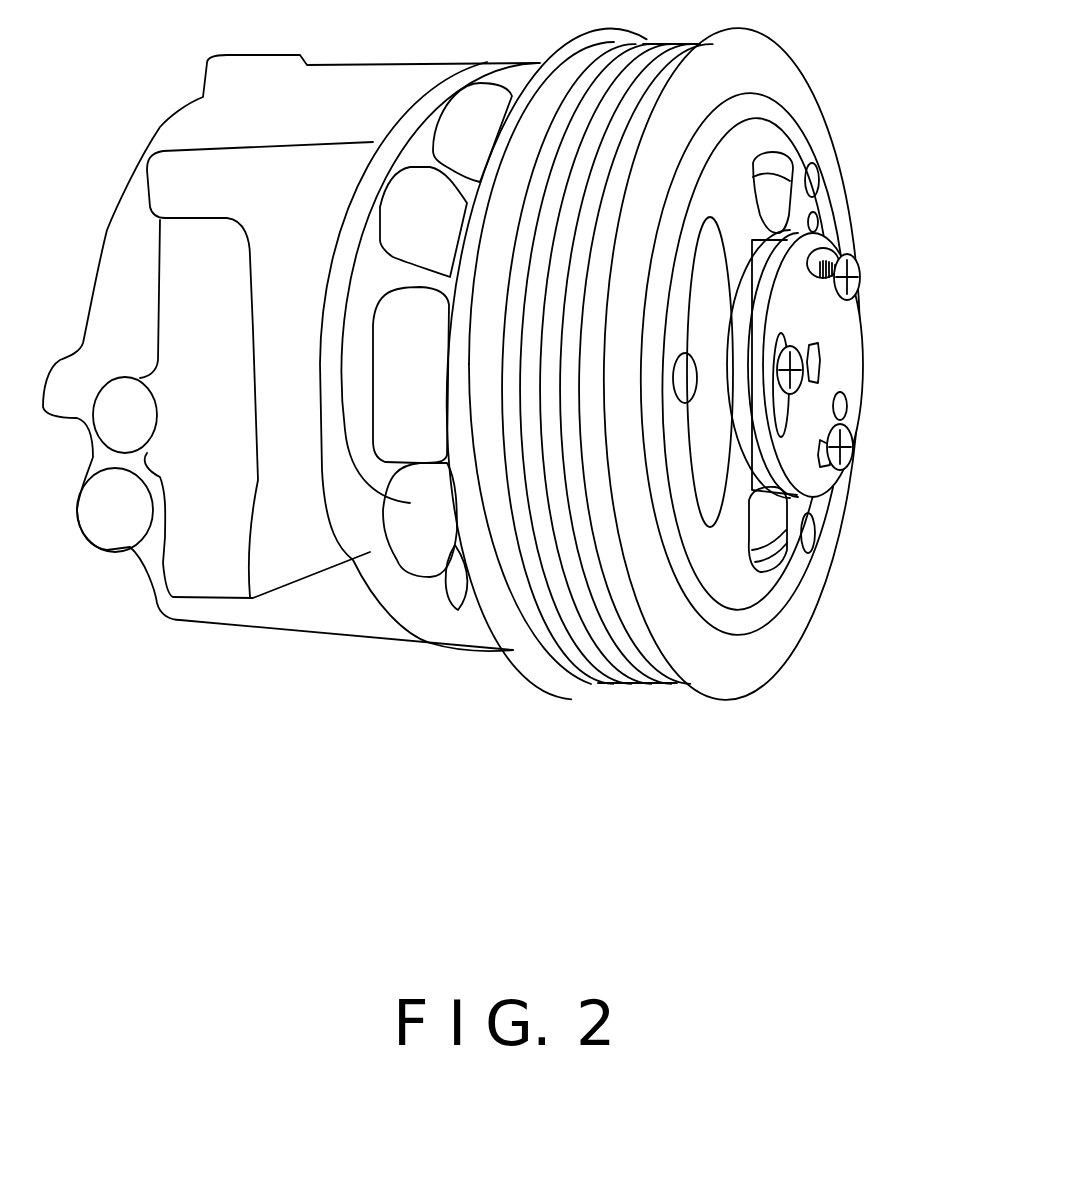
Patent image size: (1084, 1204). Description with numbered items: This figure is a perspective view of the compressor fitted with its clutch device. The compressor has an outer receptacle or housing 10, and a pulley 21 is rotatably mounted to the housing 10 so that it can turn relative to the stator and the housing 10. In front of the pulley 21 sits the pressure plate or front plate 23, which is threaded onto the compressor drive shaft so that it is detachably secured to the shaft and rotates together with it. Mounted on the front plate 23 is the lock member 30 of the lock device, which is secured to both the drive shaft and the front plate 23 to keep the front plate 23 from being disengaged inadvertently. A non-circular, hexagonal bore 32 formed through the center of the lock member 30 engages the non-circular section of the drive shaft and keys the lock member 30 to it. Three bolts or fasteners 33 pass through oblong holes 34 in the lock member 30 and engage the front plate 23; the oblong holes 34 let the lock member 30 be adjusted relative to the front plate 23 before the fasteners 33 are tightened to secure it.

The housing 10 is at (327, 610).
The pulley 21 is at (608, 645).
The front plate 23 is at (735, 578).
The lock member 30 is at (833, 330).
The hexagonal bore 32 is at (817, 365).
The fasteners 33 is at (840, 470).
The oblong holes 34 is at (847, 407).